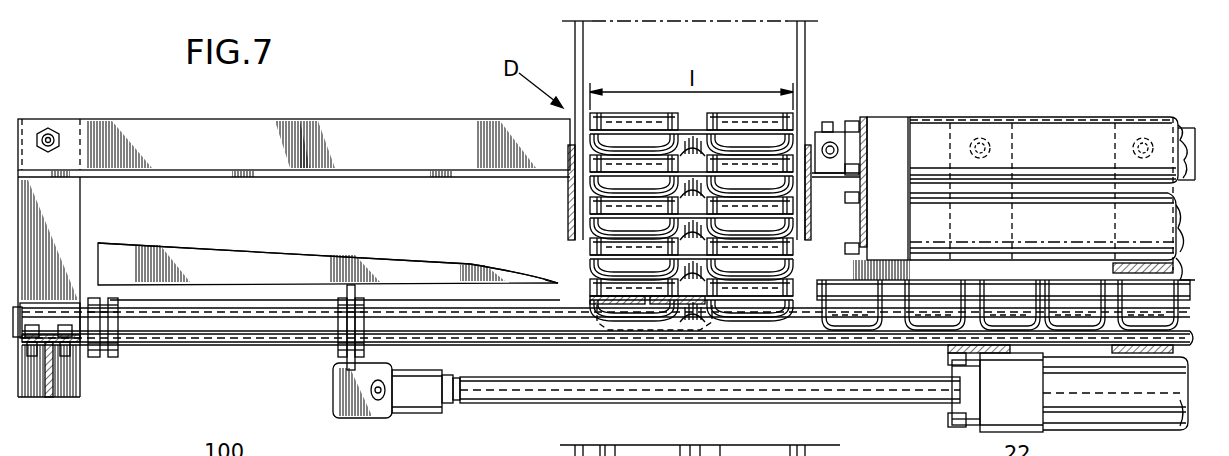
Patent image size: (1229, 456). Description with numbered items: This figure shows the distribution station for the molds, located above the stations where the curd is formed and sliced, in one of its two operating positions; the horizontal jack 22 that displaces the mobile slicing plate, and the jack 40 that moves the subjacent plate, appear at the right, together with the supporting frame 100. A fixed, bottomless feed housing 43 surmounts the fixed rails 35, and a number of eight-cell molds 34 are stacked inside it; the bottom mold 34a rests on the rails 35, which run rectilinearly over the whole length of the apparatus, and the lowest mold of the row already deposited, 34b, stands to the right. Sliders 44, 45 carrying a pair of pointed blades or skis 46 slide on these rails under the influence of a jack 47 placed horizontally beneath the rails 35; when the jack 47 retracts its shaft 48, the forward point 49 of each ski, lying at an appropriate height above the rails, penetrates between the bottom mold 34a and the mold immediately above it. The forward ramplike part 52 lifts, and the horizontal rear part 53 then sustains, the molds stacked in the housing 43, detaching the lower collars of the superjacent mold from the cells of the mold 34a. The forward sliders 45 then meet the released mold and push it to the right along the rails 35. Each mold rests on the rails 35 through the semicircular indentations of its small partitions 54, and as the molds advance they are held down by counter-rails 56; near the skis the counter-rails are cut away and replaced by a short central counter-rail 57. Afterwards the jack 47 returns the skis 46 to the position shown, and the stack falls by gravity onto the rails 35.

The support beam 100 is at (178, 132).
The horizontal jack 22 is at (1058, 124).
The mold 34 is at (641, 115).
The bottom mold 34a is at (589, 299).
The lower nut row 34b is at (822, 288).
The fixed rails 35 is at (248, 330).
The jack 40 is at (1067, 236).
The feed housing 43 is at (806, 67).
The slider 44 is at (112, 356).
The forward slider 45 is at (337, 348).
The pointed blade 46 is at (308, 254).
The jack 47 is at (1128, 416).
The shaft 48 is at (698, 390).
The forward point 49 is at (555, 276).
The ramplike part 52 is at (480, 263).
The horizontal rear part 53 is at (232, 243).
The partition 54 is at (633, 306).
The counter-rail 56 is at (1193, 266).
The central counter-rail 57 is at (975, 272).